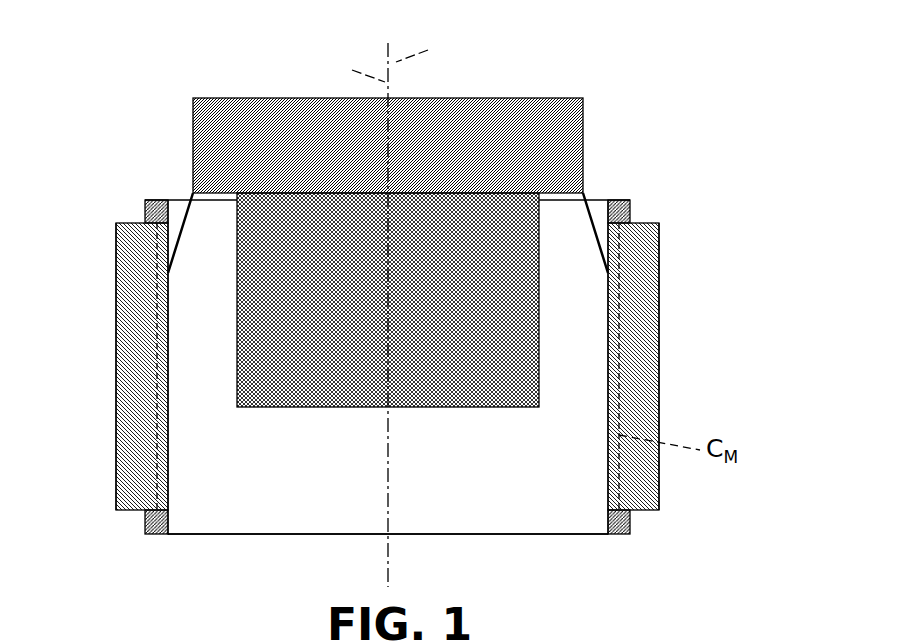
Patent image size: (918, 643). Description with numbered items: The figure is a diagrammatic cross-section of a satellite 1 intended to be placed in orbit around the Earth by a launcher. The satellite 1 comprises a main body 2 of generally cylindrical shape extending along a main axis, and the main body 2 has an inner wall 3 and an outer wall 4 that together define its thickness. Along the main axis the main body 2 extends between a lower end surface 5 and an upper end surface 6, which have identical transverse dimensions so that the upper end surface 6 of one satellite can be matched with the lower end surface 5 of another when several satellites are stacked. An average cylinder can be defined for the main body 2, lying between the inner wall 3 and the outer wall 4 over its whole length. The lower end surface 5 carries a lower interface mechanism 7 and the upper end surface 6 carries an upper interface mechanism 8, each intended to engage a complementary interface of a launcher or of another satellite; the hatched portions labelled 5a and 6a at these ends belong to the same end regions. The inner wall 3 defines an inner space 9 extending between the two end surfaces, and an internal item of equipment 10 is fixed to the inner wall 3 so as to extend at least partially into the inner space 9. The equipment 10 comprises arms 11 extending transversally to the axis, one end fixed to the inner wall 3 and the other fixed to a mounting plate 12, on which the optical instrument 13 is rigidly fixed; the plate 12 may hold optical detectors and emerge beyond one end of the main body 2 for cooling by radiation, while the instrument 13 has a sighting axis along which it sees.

The satellite 1 is at (722, 180).
The main body 2 is at (660, 373).
The inner wall 3 is at (165, 432).
The outer wall 4 is at (130, 313).
The lower end surface 5 is at (620, 538).
The lower flux guide 5a is at (145, 527).
The upper end surface 6 is at (619, 200).
The upper flux guide 6a is at (145, 212).
The lower interface mechanism 7 is at (114, 544).
The upper interface mechanism 8 is at (106, 194).
The inner space 9 is at (228, 510).
The internal item of equipment 10 is at (354, 98).
The arms 11 is at (186, 200).
The mounting plate 12 is at (516, 98).
The optical instrument 13 is at (262, 340).